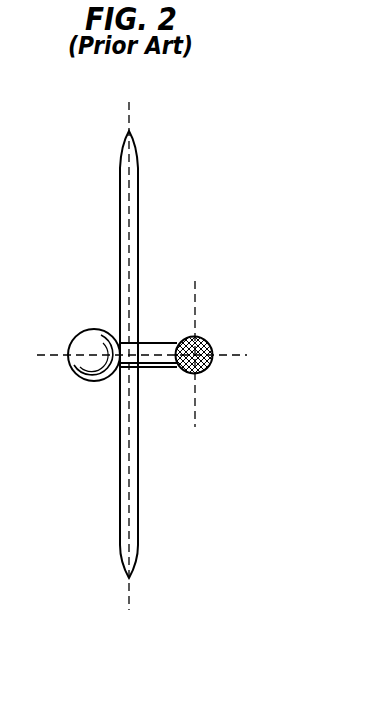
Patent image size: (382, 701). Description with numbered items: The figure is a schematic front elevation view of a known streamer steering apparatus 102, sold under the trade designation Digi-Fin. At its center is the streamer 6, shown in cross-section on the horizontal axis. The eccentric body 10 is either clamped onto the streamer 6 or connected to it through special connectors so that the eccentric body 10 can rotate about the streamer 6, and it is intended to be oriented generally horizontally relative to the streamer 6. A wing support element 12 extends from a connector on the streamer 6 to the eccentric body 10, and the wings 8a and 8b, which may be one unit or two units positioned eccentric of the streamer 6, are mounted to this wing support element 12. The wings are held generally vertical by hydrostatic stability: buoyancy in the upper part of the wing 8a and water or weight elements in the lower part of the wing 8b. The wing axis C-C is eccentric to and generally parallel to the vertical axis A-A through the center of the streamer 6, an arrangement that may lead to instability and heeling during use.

The streamer steering apparatus 102 is at (153, 360).
The upper part of the wing 8a is at (120, 228).
The lower part of the wing 8b is at (120, 483).
The eccentric body 10 is at (75, 338).
The wing support element 12 is at (160, 368).
The streamer 6 is at (201, 338).